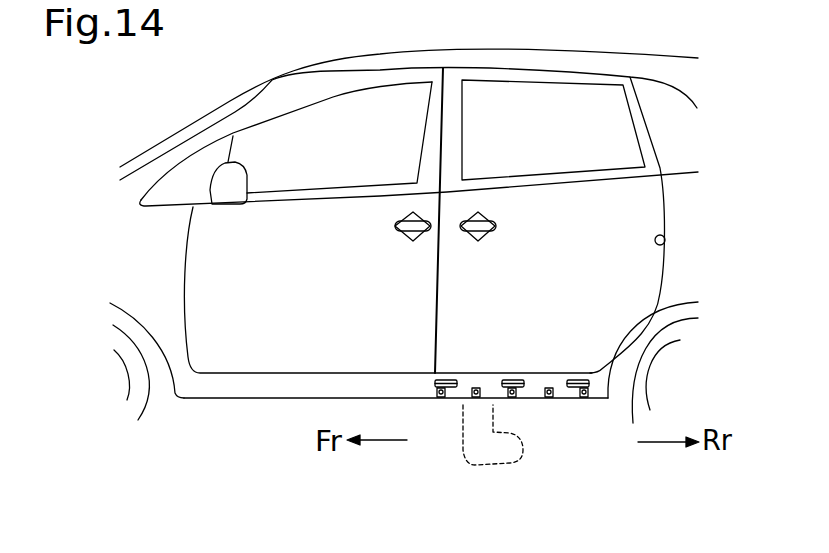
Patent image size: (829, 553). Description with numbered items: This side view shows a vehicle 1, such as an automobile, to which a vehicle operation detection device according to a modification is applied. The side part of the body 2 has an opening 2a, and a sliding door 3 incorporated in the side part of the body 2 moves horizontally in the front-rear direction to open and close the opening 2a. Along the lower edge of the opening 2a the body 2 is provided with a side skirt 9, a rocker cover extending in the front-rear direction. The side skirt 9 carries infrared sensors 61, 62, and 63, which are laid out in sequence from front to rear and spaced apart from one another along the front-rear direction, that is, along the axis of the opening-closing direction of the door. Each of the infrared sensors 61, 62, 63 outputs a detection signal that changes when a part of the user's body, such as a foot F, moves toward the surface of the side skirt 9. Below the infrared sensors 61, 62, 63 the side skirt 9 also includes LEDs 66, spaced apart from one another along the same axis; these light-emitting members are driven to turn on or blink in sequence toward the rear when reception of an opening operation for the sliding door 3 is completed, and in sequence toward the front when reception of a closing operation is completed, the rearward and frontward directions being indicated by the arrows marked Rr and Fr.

The vehicle 1 is at (221, 84).
The body 2 is at (684, 51).
The opening 2a is at (665, 238).
The sliding door 3 is at (655, 273).
The side skirt 9 is at (595, 385).
The infrared sensor 61 is at (443, 379).
The infrared sensor 62 is at (510, 379).
The infrared sensor 63 is at (577, 379).
The LED 66 is at (512, 402).
The foot F is at (525, 458).